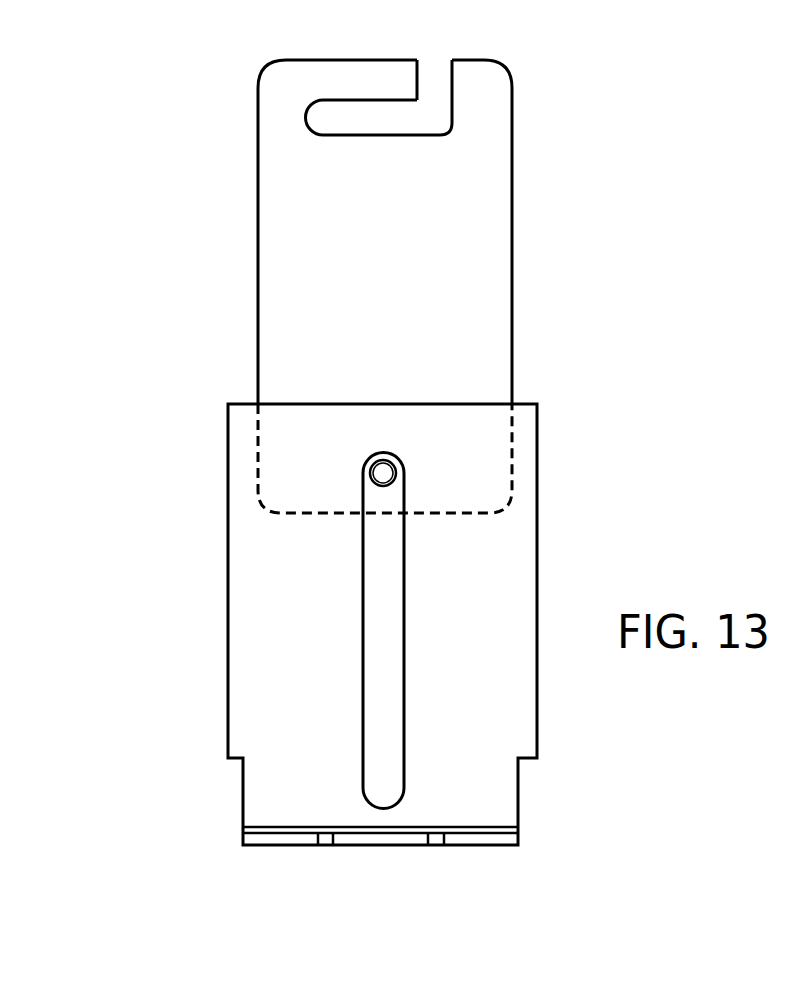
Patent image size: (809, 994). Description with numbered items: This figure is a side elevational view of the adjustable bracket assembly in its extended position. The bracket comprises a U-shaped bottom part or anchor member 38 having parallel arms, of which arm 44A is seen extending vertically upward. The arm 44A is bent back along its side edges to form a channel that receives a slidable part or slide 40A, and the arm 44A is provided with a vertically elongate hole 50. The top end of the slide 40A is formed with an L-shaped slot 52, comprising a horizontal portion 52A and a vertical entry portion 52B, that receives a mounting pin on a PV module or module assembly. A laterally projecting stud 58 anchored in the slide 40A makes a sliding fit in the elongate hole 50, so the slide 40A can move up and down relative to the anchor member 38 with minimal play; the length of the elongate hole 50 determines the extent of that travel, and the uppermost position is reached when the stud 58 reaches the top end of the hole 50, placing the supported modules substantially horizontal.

The anchor member 38 is at (206, 592).
The slide 40A is at (512, 290).
The arm 44A is at (228, 697).
The vertically elongate hole 50 is at (400, 678).
The L-shaped slot 52 is at (441, 54).
The horizontal portion 52A is at (363, 130).
The vertical entry portion 52B is at (437, 78).
The stud 58 is at (385, 473).